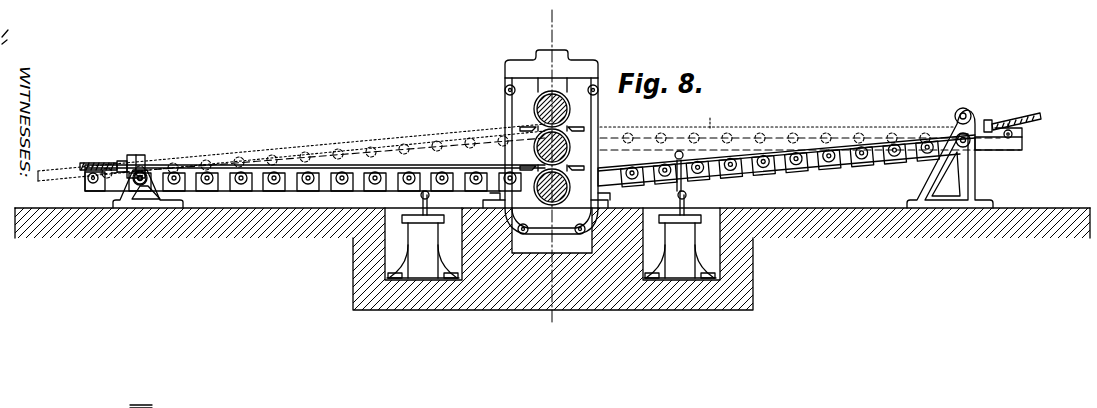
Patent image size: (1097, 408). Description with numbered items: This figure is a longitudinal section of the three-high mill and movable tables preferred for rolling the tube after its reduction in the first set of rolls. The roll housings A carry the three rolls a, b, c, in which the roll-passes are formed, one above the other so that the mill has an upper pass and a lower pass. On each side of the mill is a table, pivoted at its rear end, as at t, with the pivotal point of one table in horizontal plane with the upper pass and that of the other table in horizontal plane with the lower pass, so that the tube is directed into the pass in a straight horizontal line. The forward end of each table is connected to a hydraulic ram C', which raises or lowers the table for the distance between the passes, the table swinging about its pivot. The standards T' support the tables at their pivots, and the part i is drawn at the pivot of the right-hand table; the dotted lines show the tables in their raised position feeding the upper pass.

The roll housing A is at (506, 108).
The roll a is at (569, 107).
The roll b is at (535, 149).
The roll c is at (540, 199).
The pivot of table t is at (147, 160).
The right tilting delivery table i is at (983, 150).
The table supporting standard T' is at (544, 159).
The ram C' is at (551, 234).